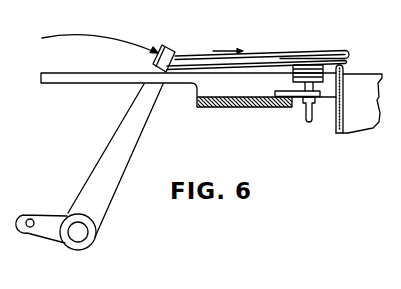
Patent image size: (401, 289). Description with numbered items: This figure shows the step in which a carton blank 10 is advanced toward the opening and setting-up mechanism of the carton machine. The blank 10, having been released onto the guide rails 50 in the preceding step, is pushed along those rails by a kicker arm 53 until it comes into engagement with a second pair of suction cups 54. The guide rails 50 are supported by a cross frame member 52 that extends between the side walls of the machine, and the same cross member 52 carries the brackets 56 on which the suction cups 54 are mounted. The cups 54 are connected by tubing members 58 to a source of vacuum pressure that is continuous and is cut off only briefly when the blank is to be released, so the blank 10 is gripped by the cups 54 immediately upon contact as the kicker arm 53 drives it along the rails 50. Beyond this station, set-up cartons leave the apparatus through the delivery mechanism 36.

The carton blank 10 is at (259, 51).
The delivery mechanism 36 is at (363, 73).
The guide rails 50 is at (83, 77).
The cross frame member 52 is at (211, 109).
The kicker arm 53 is at (125, 121).
The suction cups 54 is at (292, 76).
The brackets 56 is at (300, 104).
The tubing members 58 is at (317, 106).